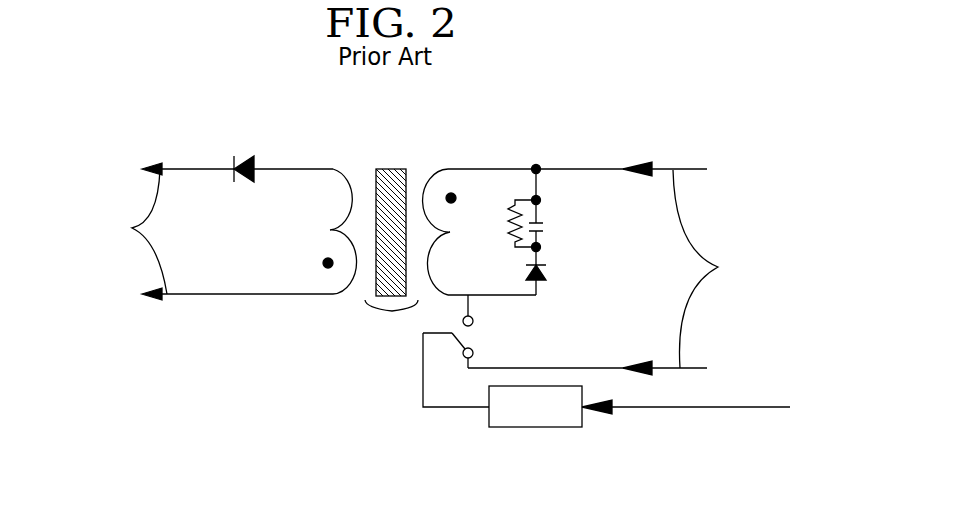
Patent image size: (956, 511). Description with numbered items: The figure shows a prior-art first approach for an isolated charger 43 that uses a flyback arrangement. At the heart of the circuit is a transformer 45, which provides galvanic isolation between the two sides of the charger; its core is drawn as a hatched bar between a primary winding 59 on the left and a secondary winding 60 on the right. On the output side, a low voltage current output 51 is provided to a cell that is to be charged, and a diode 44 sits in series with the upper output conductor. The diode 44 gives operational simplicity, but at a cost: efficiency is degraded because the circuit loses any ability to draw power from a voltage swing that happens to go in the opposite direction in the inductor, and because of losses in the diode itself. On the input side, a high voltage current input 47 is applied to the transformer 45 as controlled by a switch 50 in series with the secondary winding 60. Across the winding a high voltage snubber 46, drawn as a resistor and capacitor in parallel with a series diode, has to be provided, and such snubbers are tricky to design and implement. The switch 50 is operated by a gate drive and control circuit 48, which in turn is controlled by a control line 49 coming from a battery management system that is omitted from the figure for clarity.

The isolated charger 43 is at (405, 138).
The diode 44 is at (287, 168).
The transformer 45 is at (392, 313).
The high voltage snubber 46 is at (537, 234).
The high voltage current input 47 is at (610, 268).
The gate drive and control circuit 48 is at (523, 428).
The control line 49 is at (692, 407).
The switch 50 is at (473, 344).
The low voltage current output 51 is at (216, 231).
The primary winding 59 is at (337, 203).
The secondary winding 60 is at (460, 208).